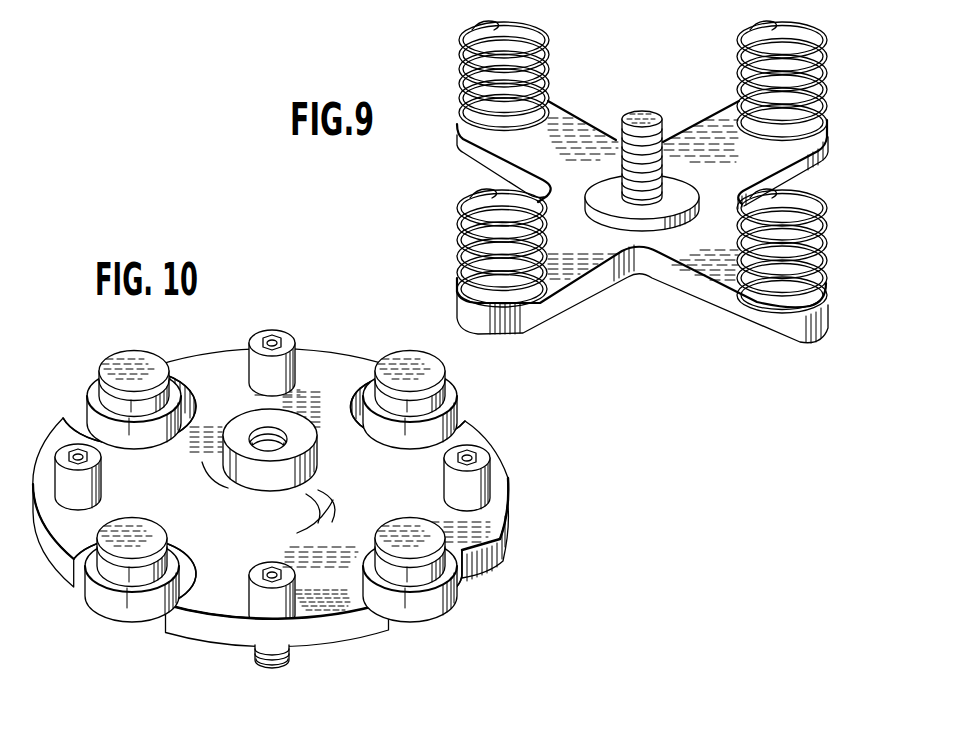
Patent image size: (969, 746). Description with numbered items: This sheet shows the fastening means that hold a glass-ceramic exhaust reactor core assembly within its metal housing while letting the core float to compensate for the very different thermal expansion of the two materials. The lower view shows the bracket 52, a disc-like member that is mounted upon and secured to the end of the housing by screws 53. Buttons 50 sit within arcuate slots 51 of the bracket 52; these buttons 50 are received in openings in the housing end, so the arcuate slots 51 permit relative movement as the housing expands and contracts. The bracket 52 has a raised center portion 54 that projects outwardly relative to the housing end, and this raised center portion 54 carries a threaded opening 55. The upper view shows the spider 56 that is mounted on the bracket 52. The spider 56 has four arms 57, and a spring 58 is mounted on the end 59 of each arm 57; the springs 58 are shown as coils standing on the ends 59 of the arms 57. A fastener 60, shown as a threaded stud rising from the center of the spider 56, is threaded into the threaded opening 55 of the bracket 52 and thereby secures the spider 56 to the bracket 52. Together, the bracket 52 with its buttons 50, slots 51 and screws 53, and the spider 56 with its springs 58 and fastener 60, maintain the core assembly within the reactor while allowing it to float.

In FIG. 10, the button 50 is at (92, 397).
In FIG. 10, the arcuate slot 51 is at (188, 398).
In FIG. 10, the bracket 52 is at (499, 551).
In FIG. 10, the screw 53 is at (490, 462).
In FIG. 10, the raised center portion 54 is at (222, 470).
In FIG. 10, the threaded opening 55 is at (313, 438).
In FIG. 9, the spider 56 is at (598, 147).
In FIG. 9, the arm 57 is at (557, 120).
In FIG. 9, the spring 58 is at (823, 58).
In FIG. 9, the end of arm 59 is at (829, 147).
In FIG. 9, the fastener 60 is at (648, 120).